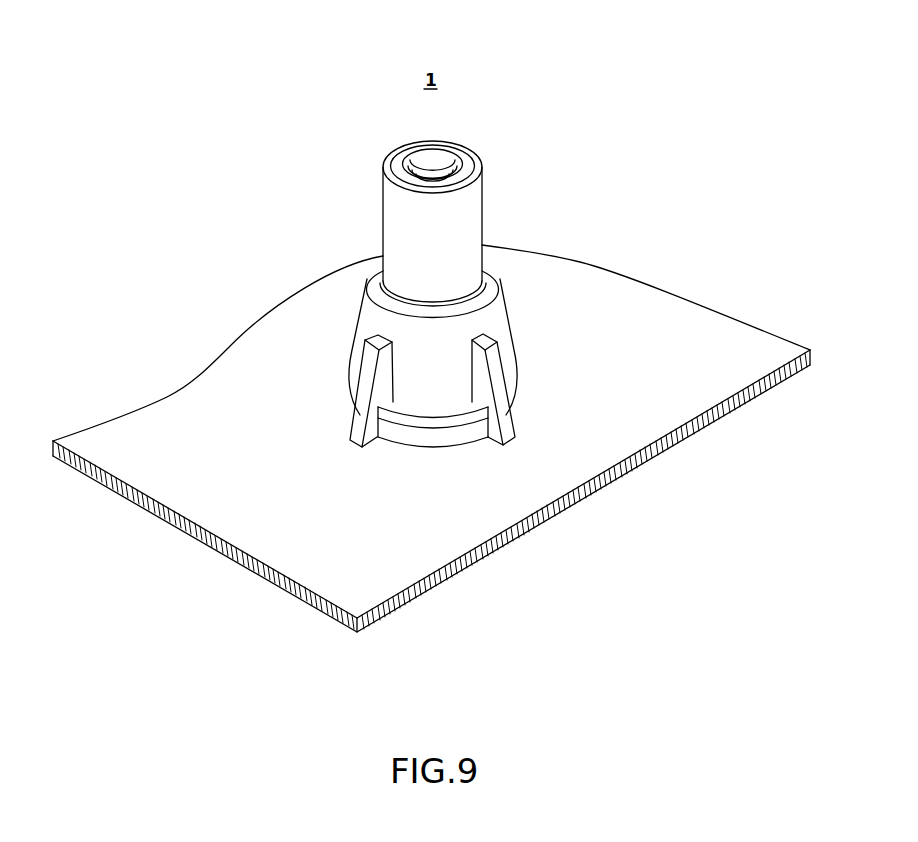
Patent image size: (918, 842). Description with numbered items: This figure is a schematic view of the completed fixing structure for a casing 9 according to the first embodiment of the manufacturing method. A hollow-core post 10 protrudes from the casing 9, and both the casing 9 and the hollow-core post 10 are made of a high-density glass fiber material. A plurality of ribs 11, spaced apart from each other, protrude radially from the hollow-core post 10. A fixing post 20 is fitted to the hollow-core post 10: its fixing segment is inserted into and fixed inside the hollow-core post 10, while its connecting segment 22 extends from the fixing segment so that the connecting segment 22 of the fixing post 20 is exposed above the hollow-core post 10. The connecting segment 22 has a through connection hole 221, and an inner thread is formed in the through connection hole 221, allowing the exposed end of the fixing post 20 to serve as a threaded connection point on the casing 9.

The casing 9 is at (253, 348).
The hollow-core post 10 is at (513, 288).
The ribs 11 is at (368, 365).
The fixing post 20 is at (485, 198).
The connecting segment 22 is at (373, 170).
The through connection hole 221 is at (438, 165).